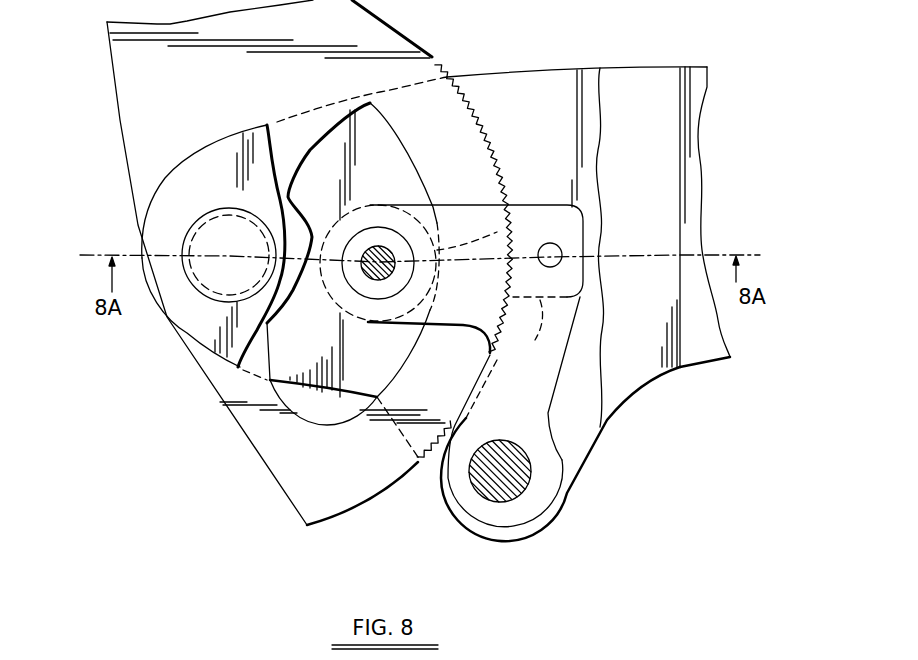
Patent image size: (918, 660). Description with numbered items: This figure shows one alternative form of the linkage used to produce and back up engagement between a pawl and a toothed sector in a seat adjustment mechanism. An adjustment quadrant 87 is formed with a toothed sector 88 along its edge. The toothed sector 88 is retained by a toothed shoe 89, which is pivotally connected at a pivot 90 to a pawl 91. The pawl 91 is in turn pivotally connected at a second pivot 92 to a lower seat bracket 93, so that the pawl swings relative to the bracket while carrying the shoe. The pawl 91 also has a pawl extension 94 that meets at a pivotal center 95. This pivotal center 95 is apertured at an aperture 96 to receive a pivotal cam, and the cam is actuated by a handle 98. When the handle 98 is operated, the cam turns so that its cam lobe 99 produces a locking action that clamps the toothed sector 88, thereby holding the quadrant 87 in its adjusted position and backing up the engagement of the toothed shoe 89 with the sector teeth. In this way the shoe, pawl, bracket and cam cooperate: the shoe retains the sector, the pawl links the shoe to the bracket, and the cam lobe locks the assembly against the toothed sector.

The adjustment quadrant 87 is at (285, 477).
The toothed sector 88 is at (498, 153).
The toothed shoe 89 is at (537, 331).
The pivotal connection 90 is at (552, 258).
The pawl 91 is at (543, 390).
The pivotal connection 92 is at (497, 493).
The lower seat bracket 93 is at (597, 447).
The pawl extension 94 is at (462, 313).
The pivotal center 95 is at (368, 323).
The aperture 96 is at (348, 290).
The handle 98 is at (375, 250).
The cam lobe 99 is at (476, 251).